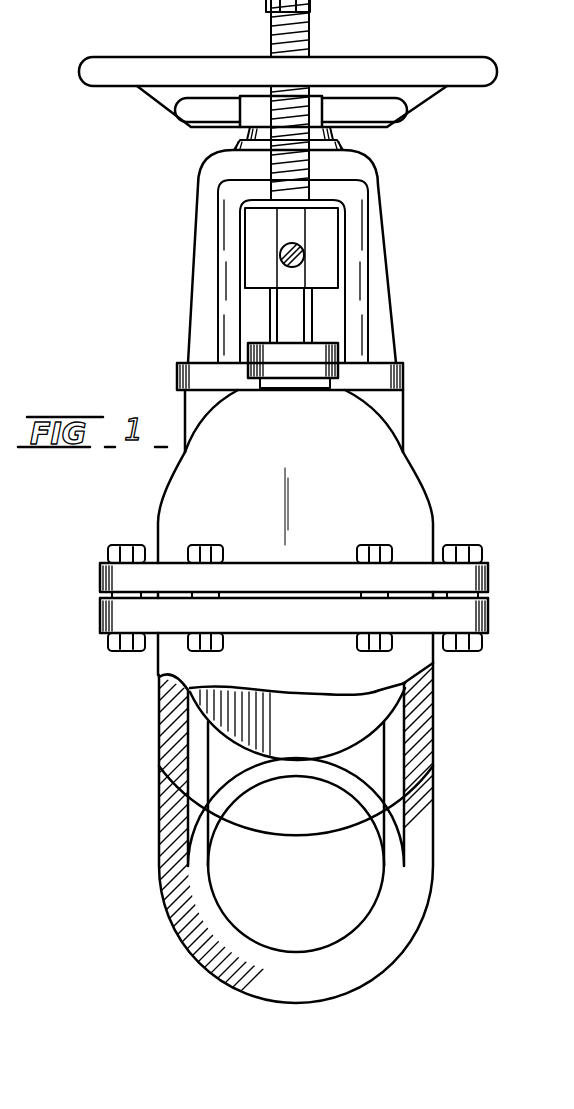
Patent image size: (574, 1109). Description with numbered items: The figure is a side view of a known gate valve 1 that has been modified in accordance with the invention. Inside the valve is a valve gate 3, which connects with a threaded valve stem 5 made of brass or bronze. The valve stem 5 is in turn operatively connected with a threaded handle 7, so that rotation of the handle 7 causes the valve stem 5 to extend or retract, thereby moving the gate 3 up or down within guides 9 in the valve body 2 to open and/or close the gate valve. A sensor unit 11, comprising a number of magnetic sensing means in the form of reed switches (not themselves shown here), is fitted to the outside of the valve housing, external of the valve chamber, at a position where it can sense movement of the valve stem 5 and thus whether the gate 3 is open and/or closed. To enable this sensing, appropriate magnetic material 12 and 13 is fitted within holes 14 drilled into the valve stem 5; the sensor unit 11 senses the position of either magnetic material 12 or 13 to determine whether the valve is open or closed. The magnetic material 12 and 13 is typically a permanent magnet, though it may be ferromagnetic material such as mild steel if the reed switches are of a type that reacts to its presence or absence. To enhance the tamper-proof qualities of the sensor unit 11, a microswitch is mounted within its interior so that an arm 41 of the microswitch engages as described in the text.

The gate valve 1 is at (436, 479).
The valve body 2 is at (417, 698).
The valve gate 3 is at (328, 734).
The threaded valve stem 5 is at (287, 325).
The threaded handle 7 is at (456, 70).
The guides 9 is at (390, 748).
The sensor unit 11 is at (327, 227).
The magnetic material 12 is at (313, 0).
The magnetic material 13 is at (275, 268).
The holes 14 is at (275, 11).
The arm 41 is at (353, 235).